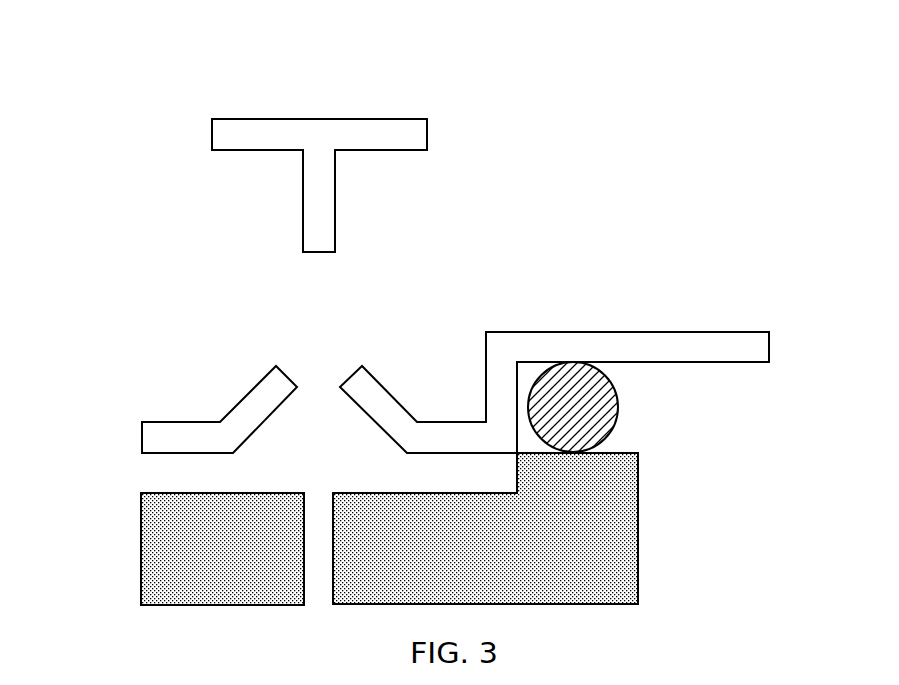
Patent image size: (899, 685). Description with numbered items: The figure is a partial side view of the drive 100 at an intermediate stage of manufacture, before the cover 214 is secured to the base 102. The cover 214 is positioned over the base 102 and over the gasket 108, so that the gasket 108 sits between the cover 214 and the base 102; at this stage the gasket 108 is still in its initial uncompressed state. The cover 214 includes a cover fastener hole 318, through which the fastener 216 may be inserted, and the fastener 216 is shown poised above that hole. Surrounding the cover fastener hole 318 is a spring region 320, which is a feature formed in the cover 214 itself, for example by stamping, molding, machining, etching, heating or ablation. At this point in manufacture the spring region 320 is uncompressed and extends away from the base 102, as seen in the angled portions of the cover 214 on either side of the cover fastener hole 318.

The drive 100 is at (125, 75).
The base 102 is at (140, 549).
The gasket 108 is at (572, 384).
The cover 214 is at (708, 348).
The fastener 216 is at (317, 138).
The cover fastener hole 318 is at (318, 371).
The spring region 320 is at (297, 357).